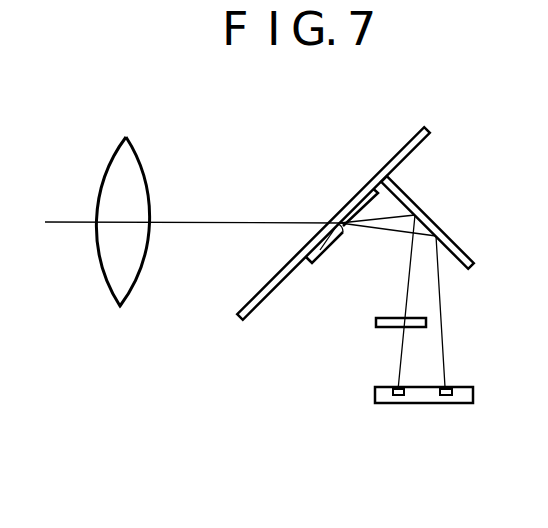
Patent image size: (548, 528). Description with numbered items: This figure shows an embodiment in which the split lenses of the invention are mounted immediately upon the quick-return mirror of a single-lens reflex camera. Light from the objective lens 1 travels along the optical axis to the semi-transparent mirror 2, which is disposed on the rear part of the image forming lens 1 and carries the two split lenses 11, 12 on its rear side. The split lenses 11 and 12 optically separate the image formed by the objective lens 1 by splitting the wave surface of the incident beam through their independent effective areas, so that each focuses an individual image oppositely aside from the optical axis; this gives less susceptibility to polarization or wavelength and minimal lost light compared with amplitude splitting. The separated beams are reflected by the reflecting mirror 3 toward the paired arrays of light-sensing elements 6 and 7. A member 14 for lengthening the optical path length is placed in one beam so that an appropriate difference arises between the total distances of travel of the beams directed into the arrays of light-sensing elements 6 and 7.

The objective lens 1 is at (147, 177).
The semi-transparent mirror 2 is at (383, 172).
The reflecting mirror 3 is at (453, 243).
The split lens 11 is at (380, 198).
The split lens 12 is at (322, 253).
The member for lengthening the optical path length 14 is at (381, 328).
The array of light-sensing elements 6 is at (398, 403).
The array of light-sensing elements 7 is at (445, 403).